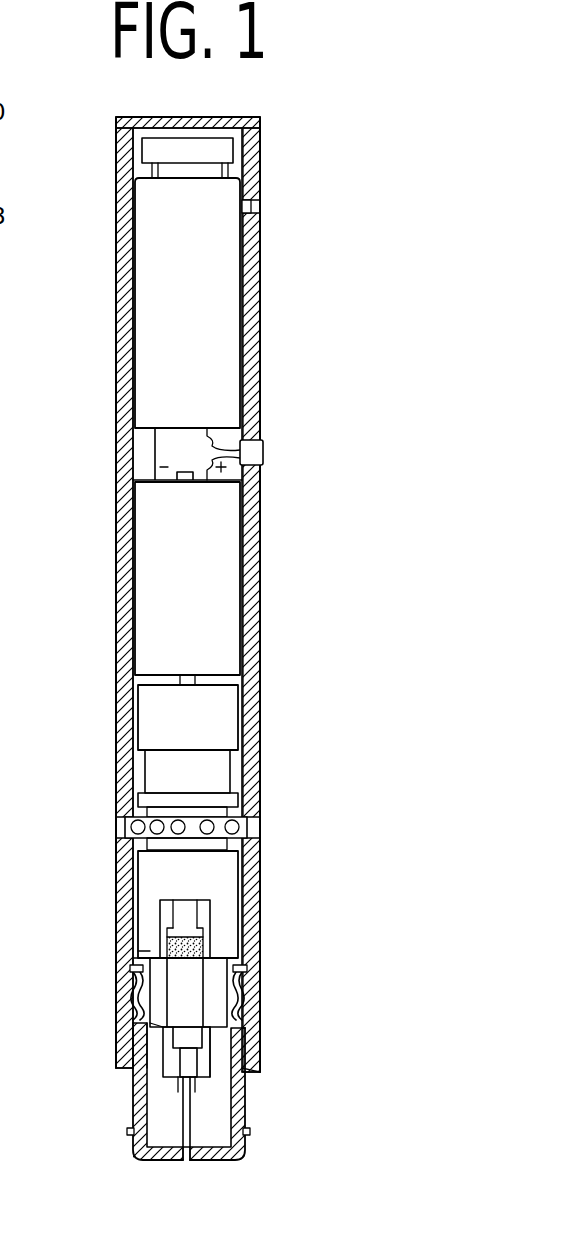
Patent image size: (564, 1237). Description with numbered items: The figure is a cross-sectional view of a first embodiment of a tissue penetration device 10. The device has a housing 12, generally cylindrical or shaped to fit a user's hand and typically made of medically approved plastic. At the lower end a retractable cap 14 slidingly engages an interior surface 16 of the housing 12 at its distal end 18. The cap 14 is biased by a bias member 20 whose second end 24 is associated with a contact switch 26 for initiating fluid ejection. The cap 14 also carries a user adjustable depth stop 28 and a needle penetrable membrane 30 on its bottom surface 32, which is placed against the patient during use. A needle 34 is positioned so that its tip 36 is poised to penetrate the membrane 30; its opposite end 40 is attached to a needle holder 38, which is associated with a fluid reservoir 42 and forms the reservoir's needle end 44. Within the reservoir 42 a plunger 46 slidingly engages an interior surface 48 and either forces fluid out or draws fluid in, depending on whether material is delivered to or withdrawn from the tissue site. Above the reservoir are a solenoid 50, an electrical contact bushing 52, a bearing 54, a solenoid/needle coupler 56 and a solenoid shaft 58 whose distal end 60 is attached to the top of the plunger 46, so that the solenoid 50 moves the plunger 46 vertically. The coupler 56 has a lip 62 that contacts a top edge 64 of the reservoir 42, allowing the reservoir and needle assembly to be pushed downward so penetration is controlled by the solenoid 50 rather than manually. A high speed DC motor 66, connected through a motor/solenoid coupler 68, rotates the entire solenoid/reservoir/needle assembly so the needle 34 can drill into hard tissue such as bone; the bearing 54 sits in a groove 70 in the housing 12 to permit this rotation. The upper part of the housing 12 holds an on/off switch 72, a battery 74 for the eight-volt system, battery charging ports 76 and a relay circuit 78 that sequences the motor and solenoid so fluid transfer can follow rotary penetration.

The tissue penetration device 10 is at (290, 107).
The housing 12 is at (249, 293).
The retractable cap 14 is at (243, 1108).
The interior surface 16 is at (248, 1054).
The distal end 18 is at (253, 1070).
The bias member 20 is at (135, 984).
The second end 24 is at (132, 968).
The contact switch 26 is at (134, 968).
The user adjustable depth stop 28 is at (127, 1132).
The needle penetrable membrane 30 is at (192, 1160).
The bottom surface 32 is at (150, 1160).
The needle 34 is at (193, 1093).
The tip 36 is at (183, 1160).
The needle holder 38 is at (215, 1043).
The opposite end 40 is at (150, 1075).
The fluid reservoir 42 is at (157, 1023).
The needle end 44 is at (197, 1020).
The plunger 46 is at (228, 925).
The interior surface 48 is at (175, 1008).
The solenoid 50 is at (210, 778).
The electrical contact bushing 52 is at (232, 802).
The bearing 54 is at (243, 827).
The solenoid/needle coupler 56 is at (150, 873).
The solenoid shaft 58 is at (182, 912).
The distal end 60 is at (190, 937).
The lip 62 is at (225, 952).
The top edge 64 is at (139, 955).
The high speed DC motor 66 is at (200, 597).
The motor/solenoid coupler 68 is at (200, 727).
The groove 70 is at (118, 826).
The on/off switch 72 is at (263, 452).
The battery 74 is at (200, 303).
The battery charging ports 76 is at (250, 207).
The relay circuit 78 is at (200, 153).